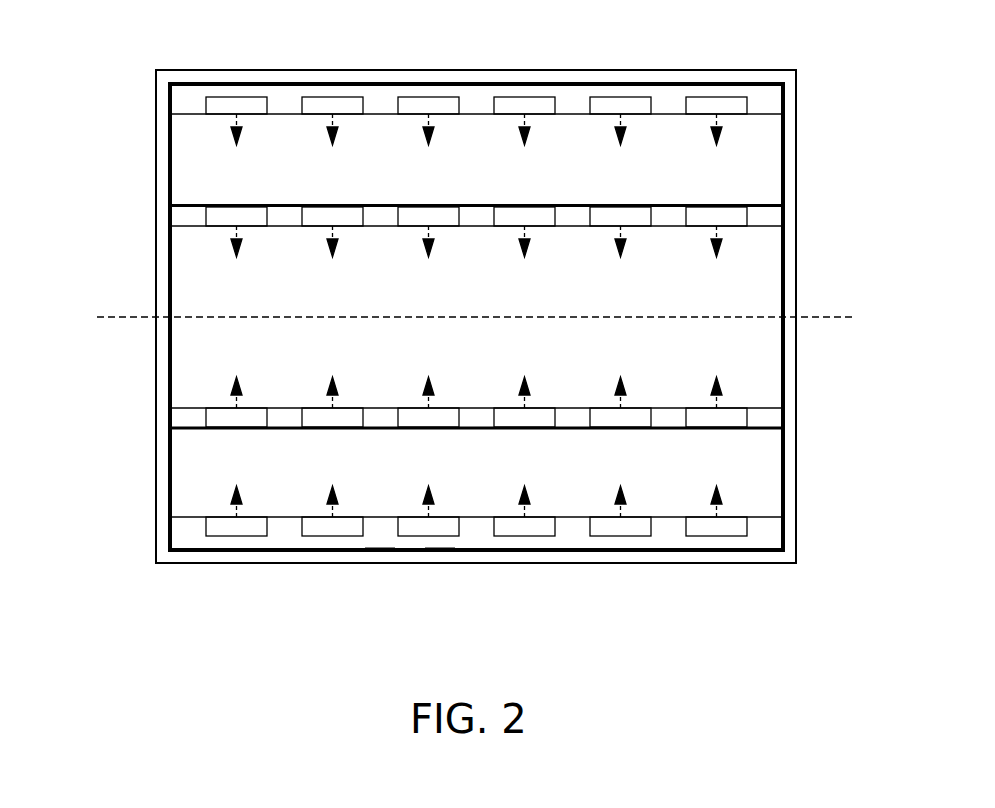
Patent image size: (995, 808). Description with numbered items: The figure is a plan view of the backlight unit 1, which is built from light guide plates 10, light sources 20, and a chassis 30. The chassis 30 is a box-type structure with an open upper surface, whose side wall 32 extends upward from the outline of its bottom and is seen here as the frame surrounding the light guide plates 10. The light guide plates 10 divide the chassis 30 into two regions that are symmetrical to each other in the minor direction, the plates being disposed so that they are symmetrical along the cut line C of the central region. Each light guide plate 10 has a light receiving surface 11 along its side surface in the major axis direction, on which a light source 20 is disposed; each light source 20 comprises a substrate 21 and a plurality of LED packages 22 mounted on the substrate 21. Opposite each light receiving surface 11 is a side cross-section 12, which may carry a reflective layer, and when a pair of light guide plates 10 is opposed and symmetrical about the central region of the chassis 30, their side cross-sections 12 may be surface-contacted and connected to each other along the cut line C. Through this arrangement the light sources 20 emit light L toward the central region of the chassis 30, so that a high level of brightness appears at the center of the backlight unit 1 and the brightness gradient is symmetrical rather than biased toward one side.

The backlight unit 1 is at (234, 35).
The light guide plate 10 is at (484, 317).
The light receiving surface 11 is at (193, 225).
The side cross-section 12 is at (193, 318).
The light source 20 is at (406, 620).
The substrate 21 is at (380, 551).
The LED package 22 is at (440, 551).
The chassis 30 is at (239, 573).
The side wall 32 is at (672, 101).
The light L is at (236, 121).
The cut line C is at (137, 316).